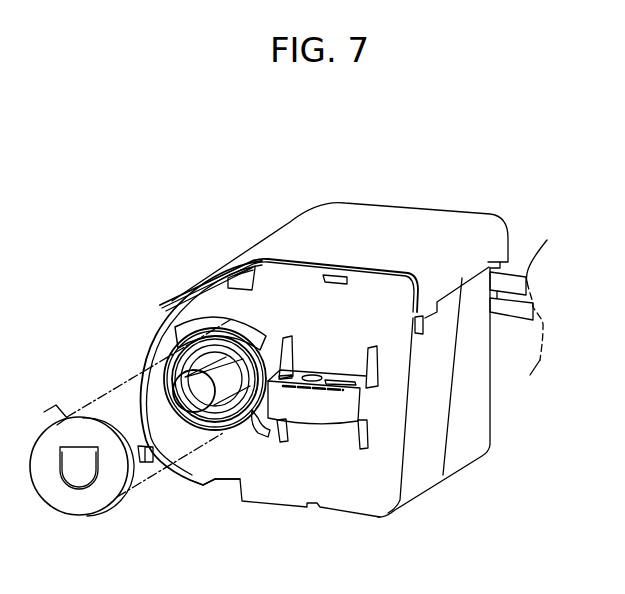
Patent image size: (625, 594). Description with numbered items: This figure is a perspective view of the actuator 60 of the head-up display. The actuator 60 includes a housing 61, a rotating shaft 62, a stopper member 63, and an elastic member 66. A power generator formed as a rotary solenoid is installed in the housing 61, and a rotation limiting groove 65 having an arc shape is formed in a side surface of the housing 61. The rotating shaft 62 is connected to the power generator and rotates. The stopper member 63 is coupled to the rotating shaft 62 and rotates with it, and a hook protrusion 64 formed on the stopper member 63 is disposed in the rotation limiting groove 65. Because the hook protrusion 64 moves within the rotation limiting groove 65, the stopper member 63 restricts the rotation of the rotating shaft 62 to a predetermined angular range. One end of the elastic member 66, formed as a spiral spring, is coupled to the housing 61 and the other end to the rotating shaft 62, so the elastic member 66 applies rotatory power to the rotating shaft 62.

The actuator 60 is at (407, 165).
The housing 61 is at (383, 482).
The rotating shaft 62 is at (193, 400).
The stopper member 63 is at (187, 360).
The hook protrusion 64 is at (55, 420).
The rotation limiting groove 65 is at (220, 317).
The elastic member 66 is at (230, 433).